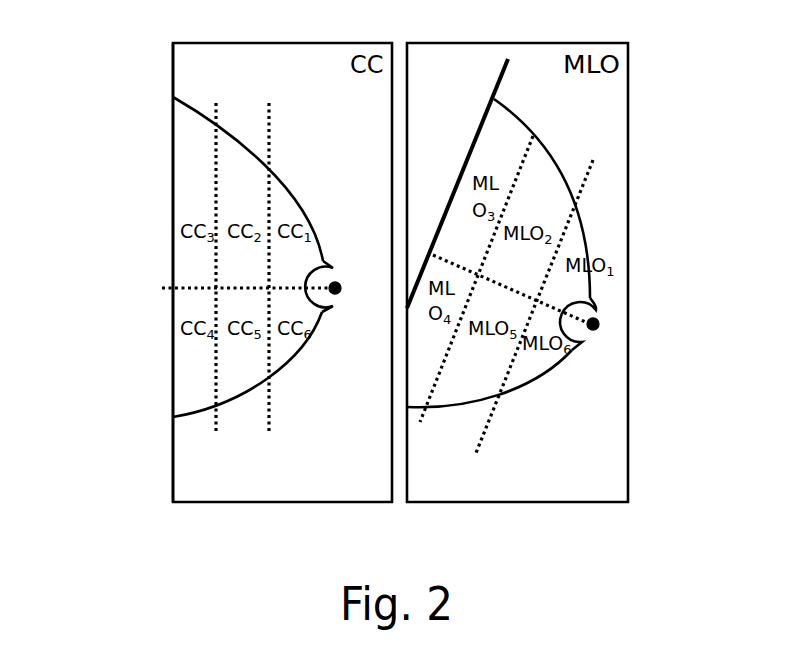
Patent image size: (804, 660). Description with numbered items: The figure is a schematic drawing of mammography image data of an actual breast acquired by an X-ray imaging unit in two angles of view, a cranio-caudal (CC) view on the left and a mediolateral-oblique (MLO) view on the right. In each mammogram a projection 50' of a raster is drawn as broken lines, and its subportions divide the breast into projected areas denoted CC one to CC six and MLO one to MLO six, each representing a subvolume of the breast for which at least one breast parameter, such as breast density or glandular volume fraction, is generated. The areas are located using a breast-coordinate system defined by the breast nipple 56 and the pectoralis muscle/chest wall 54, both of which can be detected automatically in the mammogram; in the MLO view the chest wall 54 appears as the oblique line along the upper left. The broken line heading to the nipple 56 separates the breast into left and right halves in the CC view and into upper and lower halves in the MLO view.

The pectoralis muscle/chest wall 54 is at (173, 127).
The projection of the raster 50' is at (381, 288).
The breast nipple 56 is at (338, 282).